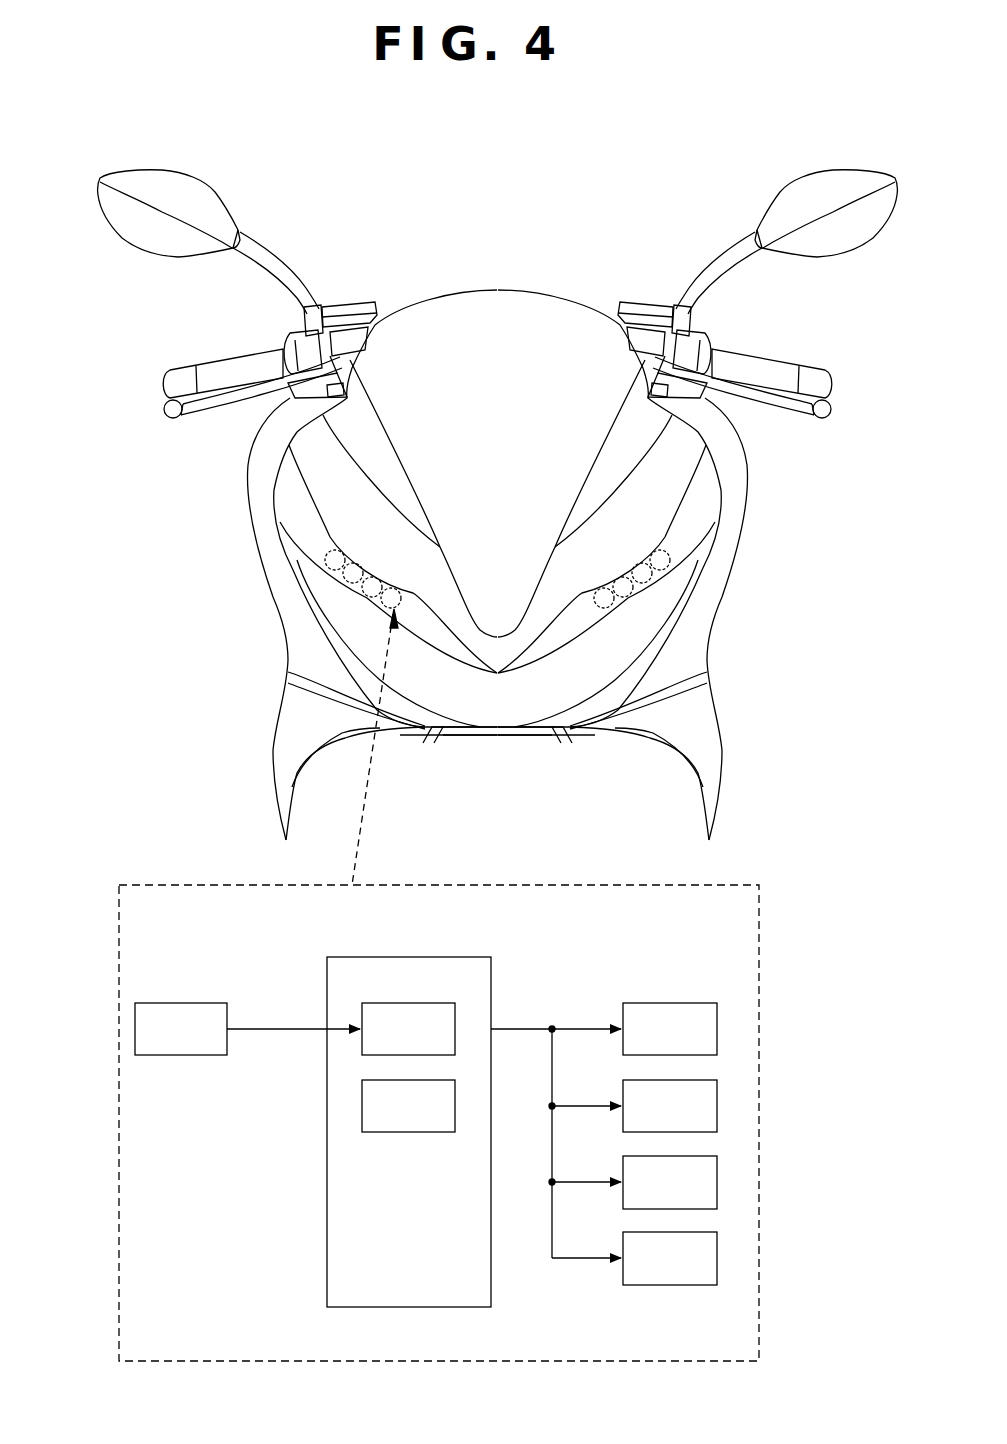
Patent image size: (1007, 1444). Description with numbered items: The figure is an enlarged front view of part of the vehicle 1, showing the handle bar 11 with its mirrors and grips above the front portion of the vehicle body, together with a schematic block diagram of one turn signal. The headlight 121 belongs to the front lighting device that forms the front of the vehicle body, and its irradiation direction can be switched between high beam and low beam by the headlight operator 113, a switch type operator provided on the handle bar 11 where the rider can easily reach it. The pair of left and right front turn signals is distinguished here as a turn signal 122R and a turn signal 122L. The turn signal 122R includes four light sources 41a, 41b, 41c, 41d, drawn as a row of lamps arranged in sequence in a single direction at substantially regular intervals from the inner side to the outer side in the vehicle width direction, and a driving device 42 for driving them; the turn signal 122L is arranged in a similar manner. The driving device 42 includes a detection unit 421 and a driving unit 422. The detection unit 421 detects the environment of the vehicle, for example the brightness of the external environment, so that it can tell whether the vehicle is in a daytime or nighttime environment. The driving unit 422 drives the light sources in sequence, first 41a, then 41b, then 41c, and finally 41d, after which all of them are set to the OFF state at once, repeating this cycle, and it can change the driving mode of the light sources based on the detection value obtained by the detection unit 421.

The vehicle 1 is at (288, 148).
The handle bar 11 is at (118, 358).
The headlight 121 is at (503, 707).
The turn signal 122R is at (180, 672).
The turn signal 122L is at (648, 600).
The light source 41a is at (390, 609).
The light source 41b is at (370, 598).
The light source 41c is at (351, 583).
The light source 41d is at (329, 569).
The driving device 42 is at (394, 1272).
The detection unit 421 is at (408, 1029).
The driving unit 422 is at (408, 1106).
The headlight operator 113 is at (181, 1029).